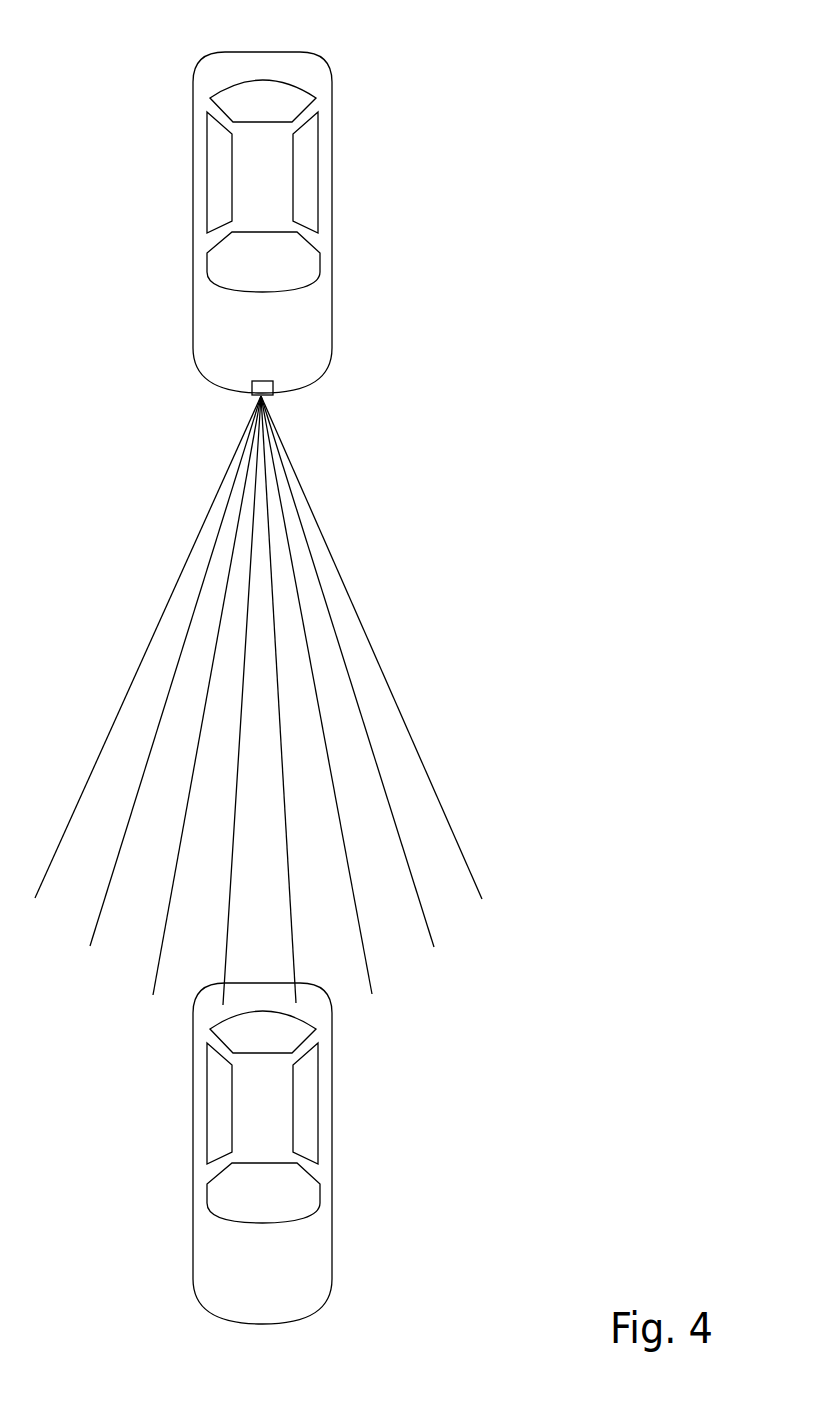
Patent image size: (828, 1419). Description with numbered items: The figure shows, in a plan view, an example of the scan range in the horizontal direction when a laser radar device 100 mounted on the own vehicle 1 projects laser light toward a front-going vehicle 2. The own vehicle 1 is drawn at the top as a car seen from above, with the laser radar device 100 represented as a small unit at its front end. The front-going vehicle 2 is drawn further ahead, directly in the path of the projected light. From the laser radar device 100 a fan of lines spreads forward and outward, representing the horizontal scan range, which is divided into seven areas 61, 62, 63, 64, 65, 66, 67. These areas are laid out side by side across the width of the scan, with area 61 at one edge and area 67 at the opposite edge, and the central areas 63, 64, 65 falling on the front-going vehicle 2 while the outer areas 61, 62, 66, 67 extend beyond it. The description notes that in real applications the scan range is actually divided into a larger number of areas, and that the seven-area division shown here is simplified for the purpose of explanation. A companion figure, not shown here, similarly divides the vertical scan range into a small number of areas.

The own vehicle 1 is at (332, 80).
The front-going vehicle 2 is at (280, 1153).
The laser radar device 100 is at (272, 400).
The area 61 is at (371, 671).
The area 62 is at (326, 695).
The area 63 is at (298, 699).
The area 64 is at (250, 700).
The area 65 is at (207, 695).
The area 66 is at (175, 671).
The area 67 is at (148, 647).